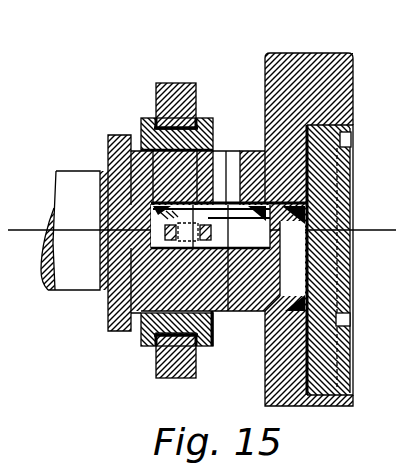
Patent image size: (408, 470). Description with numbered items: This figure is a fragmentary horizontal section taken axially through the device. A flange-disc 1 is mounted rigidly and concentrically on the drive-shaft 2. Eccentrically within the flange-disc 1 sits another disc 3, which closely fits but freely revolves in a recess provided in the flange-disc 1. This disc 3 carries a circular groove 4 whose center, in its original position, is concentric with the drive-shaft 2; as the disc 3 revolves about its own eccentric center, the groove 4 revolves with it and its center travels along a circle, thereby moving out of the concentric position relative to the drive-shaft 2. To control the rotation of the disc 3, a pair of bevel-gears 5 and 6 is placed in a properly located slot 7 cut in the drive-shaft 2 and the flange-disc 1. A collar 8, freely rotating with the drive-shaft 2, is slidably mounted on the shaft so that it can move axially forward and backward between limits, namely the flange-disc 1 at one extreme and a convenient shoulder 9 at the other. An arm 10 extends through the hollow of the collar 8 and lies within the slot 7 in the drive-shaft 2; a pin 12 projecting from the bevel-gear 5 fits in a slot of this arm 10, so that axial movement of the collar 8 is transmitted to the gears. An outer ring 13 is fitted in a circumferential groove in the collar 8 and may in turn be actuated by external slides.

The flange-disc 1 is at (292, 46).
The drive-shaft 2 is at (58, 283).
The disc 3 is at (354, 189).
The circular groove 4 is at (344, 133).
The bevel-gear 5 is at (242, 143).
The bevel-gear 6 is at (251, 337).
The slot 7 is at (207, 143).
The collar 8 is at (133, 328).
The shoulder 9 is at (100, 127).
The arm 10 is at (226, 242).
The pin 12 is at (205, 242).
The outer ring 13 is at (148, 88).